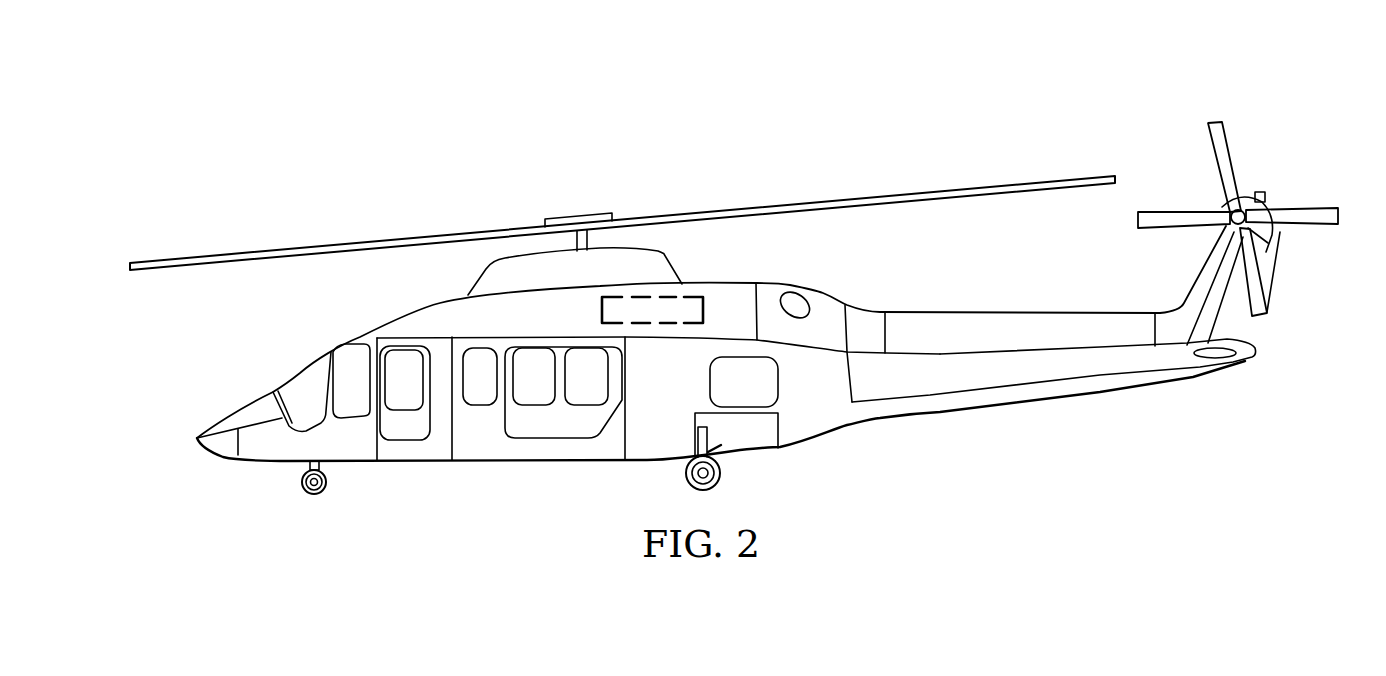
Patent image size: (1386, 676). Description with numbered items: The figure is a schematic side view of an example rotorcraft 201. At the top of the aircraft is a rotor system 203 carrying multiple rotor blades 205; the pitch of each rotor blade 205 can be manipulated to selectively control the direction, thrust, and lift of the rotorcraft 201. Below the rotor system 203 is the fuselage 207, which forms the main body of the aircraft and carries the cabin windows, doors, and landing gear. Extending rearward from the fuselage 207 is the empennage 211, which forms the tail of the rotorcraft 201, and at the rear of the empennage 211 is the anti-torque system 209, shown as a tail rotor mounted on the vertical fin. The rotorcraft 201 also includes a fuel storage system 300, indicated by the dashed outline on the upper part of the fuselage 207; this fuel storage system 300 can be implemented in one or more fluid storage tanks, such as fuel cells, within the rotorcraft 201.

The rotorcraft 201 is at (322, 108).
The rotor system 203 is at (598, 185).
The rotor blades 205 is at (317, 246).
The fuselage 207 is at (487, 463).
The anti-torque system 209 is at (1266, 163).
The empennage 211 is at (1066, 397).
The fuel storage system 300 is at (696, 294).